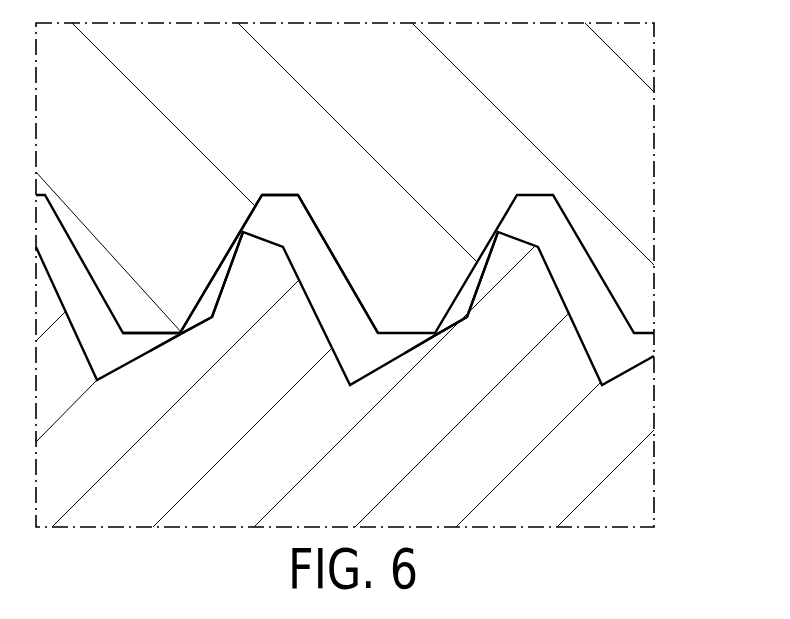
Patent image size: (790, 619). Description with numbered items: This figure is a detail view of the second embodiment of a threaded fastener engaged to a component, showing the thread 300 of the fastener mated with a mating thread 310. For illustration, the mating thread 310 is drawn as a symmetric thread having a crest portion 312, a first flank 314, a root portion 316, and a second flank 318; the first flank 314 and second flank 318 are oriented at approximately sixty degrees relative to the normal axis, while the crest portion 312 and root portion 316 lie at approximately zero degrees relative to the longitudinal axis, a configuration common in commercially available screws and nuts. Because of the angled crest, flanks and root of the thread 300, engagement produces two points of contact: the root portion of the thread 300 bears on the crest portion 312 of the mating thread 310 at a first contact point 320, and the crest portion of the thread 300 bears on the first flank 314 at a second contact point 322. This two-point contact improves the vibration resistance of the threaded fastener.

The thread 300 is at (635, 482).
The mating thread 310 is at (380, 112).
The crest portion 312 is at (140, 333).
The first flank 314 is at (240, 242).
The root portion 316 is at (289, 195).
The second flank 318 is at (367, 236).
The first contact point 320 is at (183, 335).
The second contact point 322 is at (497, 238).